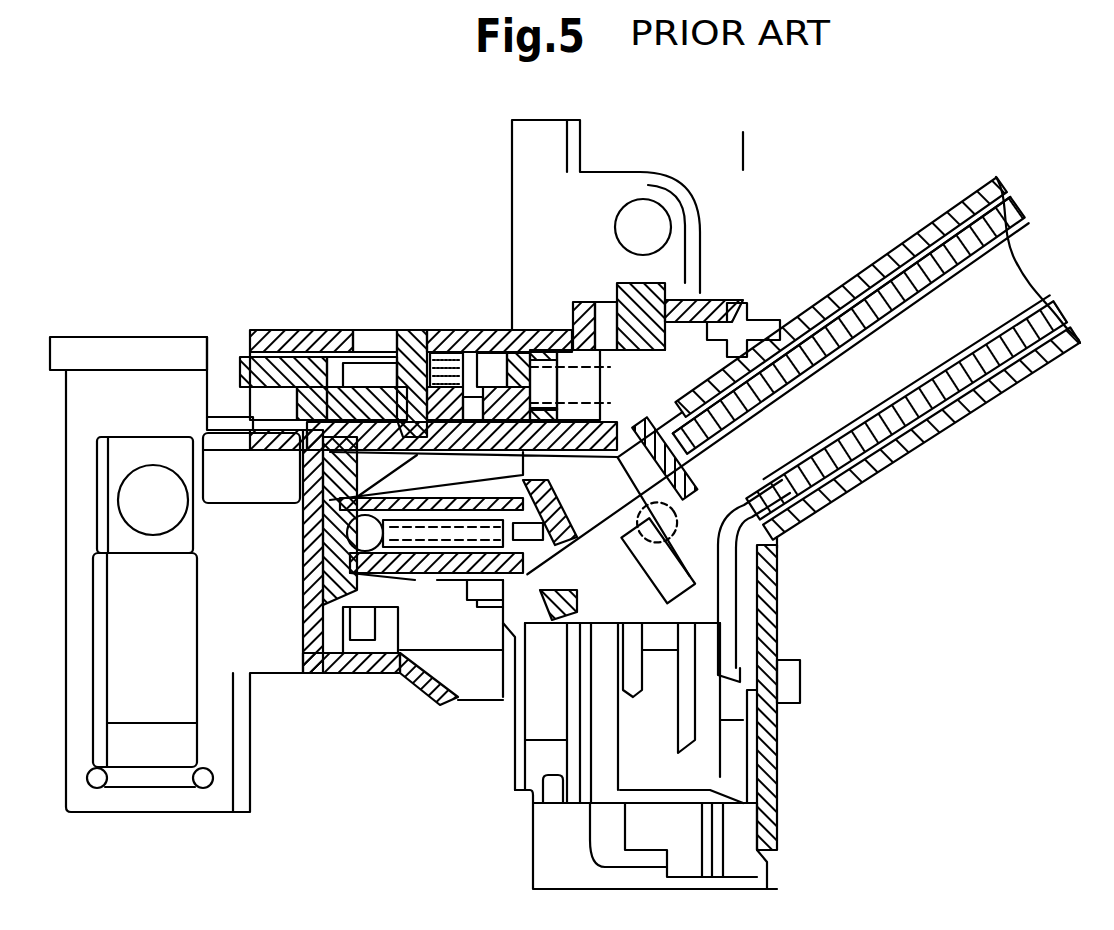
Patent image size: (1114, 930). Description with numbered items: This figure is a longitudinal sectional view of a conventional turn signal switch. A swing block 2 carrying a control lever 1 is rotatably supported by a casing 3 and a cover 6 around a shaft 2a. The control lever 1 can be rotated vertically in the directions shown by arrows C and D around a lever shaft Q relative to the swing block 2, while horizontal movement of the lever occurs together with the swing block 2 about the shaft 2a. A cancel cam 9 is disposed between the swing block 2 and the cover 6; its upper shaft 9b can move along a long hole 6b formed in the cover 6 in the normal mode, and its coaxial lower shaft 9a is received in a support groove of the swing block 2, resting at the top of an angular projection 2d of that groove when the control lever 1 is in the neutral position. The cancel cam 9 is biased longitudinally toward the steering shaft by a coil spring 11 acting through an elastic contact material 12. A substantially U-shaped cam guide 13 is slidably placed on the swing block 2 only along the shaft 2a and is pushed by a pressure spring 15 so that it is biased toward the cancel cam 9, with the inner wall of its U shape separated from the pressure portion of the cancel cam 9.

The control lever 1 is at (945, 205).
The swing block 2 is at (330, 462).
The shaft 2a is at (663, 285).
The angular projection 2d is at (372, 357).
The casing 3 is at (460, 708).
The cover 6 is at (283, 332).
The long hole 6b is at (360, 332).
The cancel cam 9 is at (243, 362).
The lower shaft 9a is at (333, 522).
The upper shaft 9b is at (412, 330).
The coil spring 11 is at (470, 347).
The elastic contact material 12 is at (438, 330).
The cam guide 13 is at (537, 332).
The pressure spring 15 is at (590, 303).
The arrow C is at (890, 232).
The arrow D is at (1004, 402).
The lever shaft Q is at (676, 508).